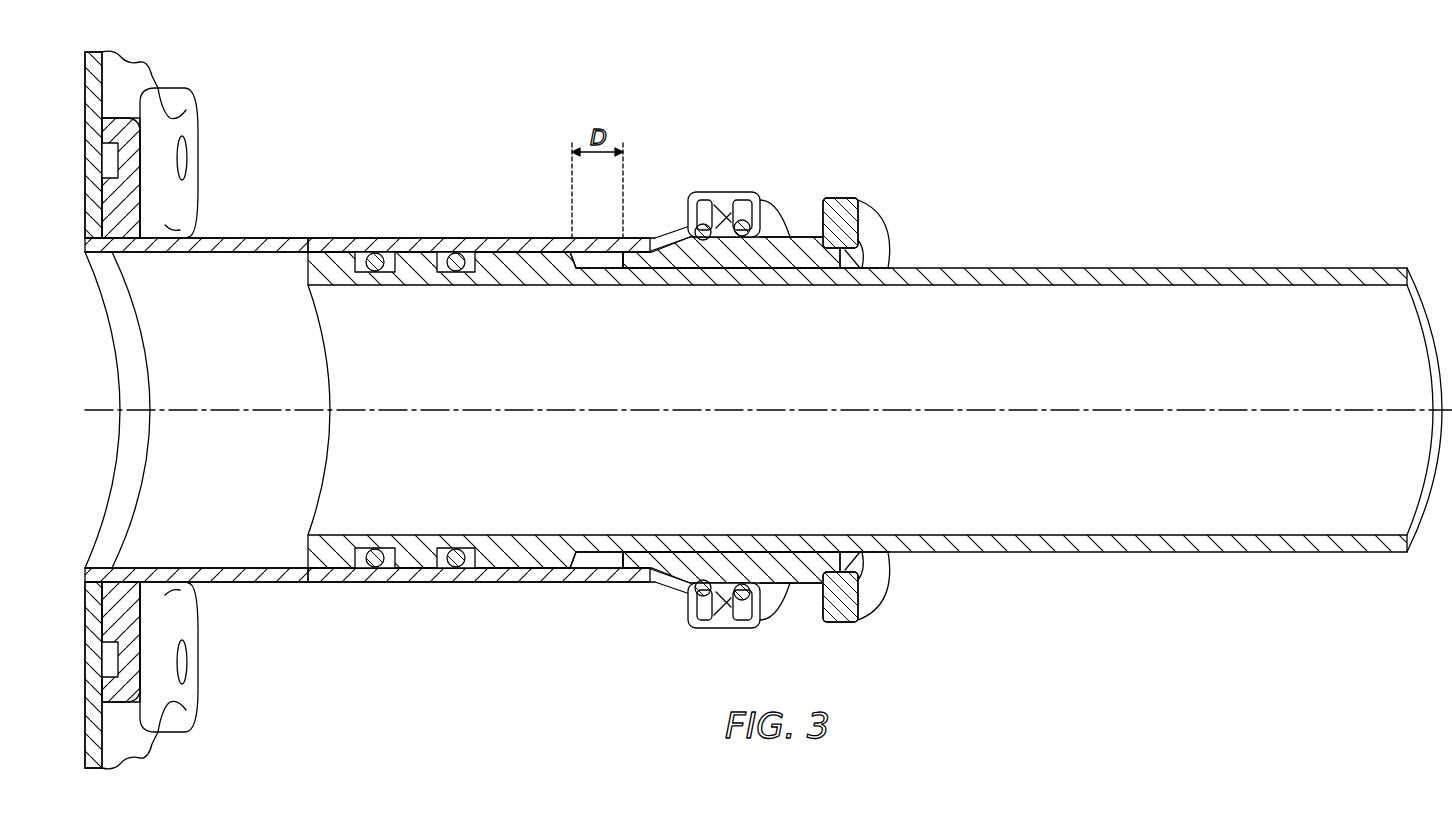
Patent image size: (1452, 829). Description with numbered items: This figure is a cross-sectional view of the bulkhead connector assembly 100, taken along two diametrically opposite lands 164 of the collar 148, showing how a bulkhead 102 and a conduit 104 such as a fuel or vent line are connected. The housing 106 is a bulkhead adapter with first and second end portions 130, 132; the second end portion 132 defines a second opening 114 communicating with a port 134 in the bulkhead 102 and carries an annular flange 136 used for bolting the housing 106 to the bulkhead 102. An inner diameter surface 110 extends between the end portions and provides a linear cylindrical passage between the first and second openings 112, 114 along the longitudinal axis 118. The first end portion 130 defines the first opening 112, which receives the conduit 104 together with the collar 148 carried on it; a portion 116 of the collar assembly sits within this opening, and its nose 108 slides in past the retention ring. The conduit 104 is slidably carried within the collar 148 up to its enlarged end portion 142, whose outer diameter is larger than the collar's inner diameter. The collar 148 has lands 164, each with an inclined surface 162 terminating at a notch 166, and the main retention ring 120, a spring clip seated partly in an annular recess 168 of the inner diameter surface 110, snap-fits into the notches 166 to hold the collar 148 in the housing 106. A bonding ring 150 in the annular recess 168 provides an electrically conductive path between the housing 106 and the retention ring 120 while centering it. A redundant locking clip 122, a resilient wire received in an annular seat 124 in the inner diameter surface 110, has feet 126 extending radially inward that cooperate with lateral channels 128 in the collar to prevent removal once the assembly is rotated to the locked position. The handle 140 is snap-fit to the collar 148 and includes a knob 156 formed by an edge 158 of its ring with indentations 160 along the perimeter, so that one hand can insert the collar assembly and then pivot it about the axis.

The bulkhead connector assembly 100 is at (781, 132).
The bulkhead 102 is at (104, 73).
The conduit 104 is at (1345, 268).
The housing 106 is at (333, 238).
The nose 108 is at (807, 237).
The inner diameter surface 110 is at (260, 570).
The first opening 112 is at (787, 588).
The second opening 114 is at (150, 404).
The portion of the collar assembly 116 is at (577, 250).
The longitudinal axis 118 is at (1268, 410).
The main retention ring 120 is at (687, 235).
The redundant locking clip 122 is at (742, 213).
The annular seat 124 is at (742, 615).
The feet 126 is at (753, 196).
The lateral channels 128 is at (760, 595).
The first end portion 130 is at (703, 606).
The second end portion 132 is at (200, 238).
The port 134 is at (110, 568).
The annular flange 136 is at (190, 730).
The handle 140 is at (880, 223).
The enlarged end portion 142 is at (560, 590).
The collar 148 is at (818, 613).
The bonding ring 150 is at (890, 593).
The knob 156 is at (888, 252).
The edge 158 is at (863, 213).
The indentations 160 is at (882, 566).
The inclined surface 162 is at (605, 570).
The lands 164 is at (693, 586).
The notches 166 is at (705, 215).
The annular recess 168 is at (700, 618).